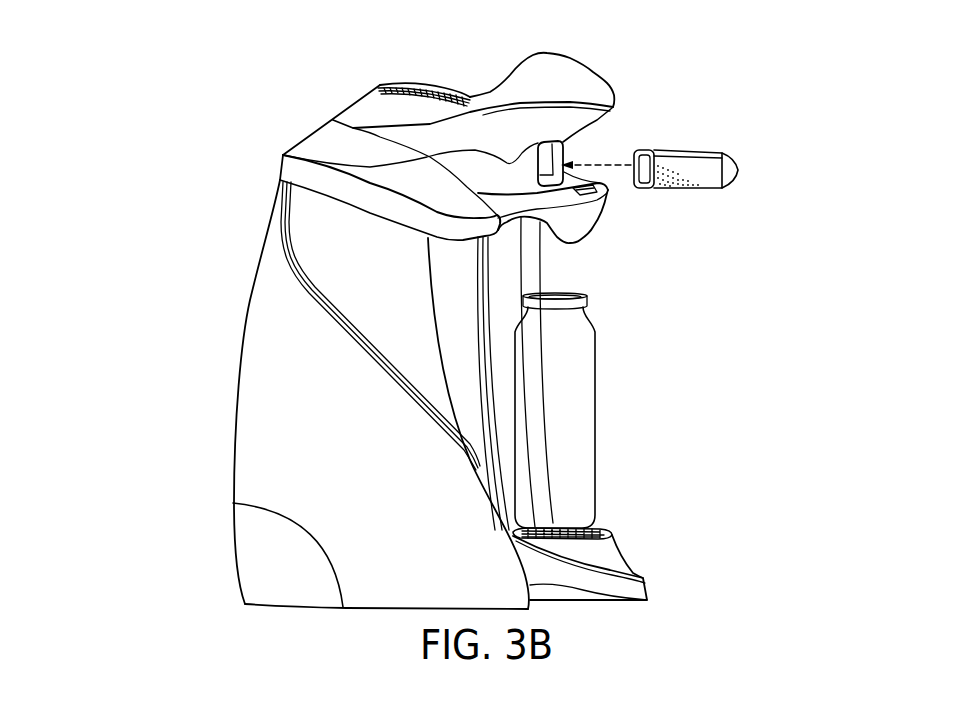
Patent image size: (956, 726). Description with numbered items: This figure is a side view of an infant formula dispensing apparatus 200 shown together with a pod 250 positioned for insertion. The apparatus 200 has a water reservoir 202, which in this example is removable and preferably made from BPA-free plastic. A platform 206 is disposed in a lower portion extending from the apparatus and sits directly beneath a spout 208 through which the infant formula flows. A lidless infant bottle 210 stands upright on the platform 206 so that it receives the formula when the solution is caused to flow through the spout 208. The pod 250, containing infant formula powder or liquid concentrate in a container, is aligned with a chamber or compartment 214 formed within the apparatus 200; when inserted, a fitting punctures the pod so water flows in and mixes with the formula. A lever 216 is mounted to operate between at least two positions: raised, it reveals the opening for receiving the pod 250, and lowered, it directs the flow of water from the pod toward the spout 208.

The infant formula dispensing apparatus 200 is at (208, 485).
The water reservoir 202 is at (332, 296).
The platform 206 is at (608, 557).
The spout 208 is at (592, 220).
The lidless infant bottle 210 is at (573, 425).
The chamber or compartment 214 is at (560, 154).
The lever 216 is at (572, 77).
The pod 250 is at (686, 132).